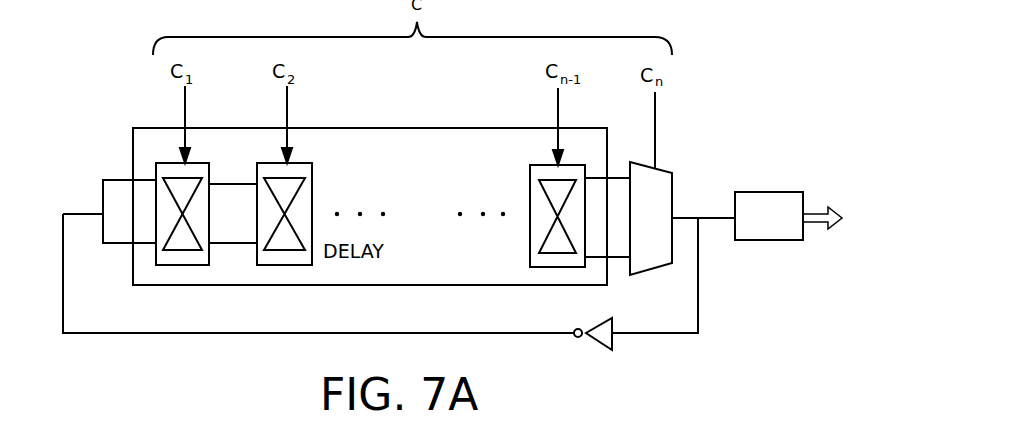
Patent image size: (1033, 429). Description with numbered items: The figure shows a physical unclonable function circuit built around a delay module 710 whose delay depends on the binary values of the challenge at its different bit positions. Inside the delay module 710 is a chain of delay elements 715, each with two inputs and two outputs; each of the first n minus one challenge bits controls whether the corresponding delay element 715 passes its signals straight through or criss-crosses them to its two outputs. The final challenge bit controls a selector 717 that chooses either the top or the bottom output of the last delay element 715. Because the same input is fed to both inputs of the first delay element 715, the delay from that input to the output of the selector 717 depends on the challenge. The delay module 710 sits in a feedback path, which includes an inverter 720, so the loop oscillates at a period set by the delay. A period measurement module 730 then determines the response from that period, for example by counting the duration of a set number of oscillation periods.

The delay module 710 is at (412, 128).
The delay element 715 is at (210, 265).
The selector 717 is at (658, 263).
The inverter 720 is at (603, 345).
The period measurement module 730 is at (757, 240).